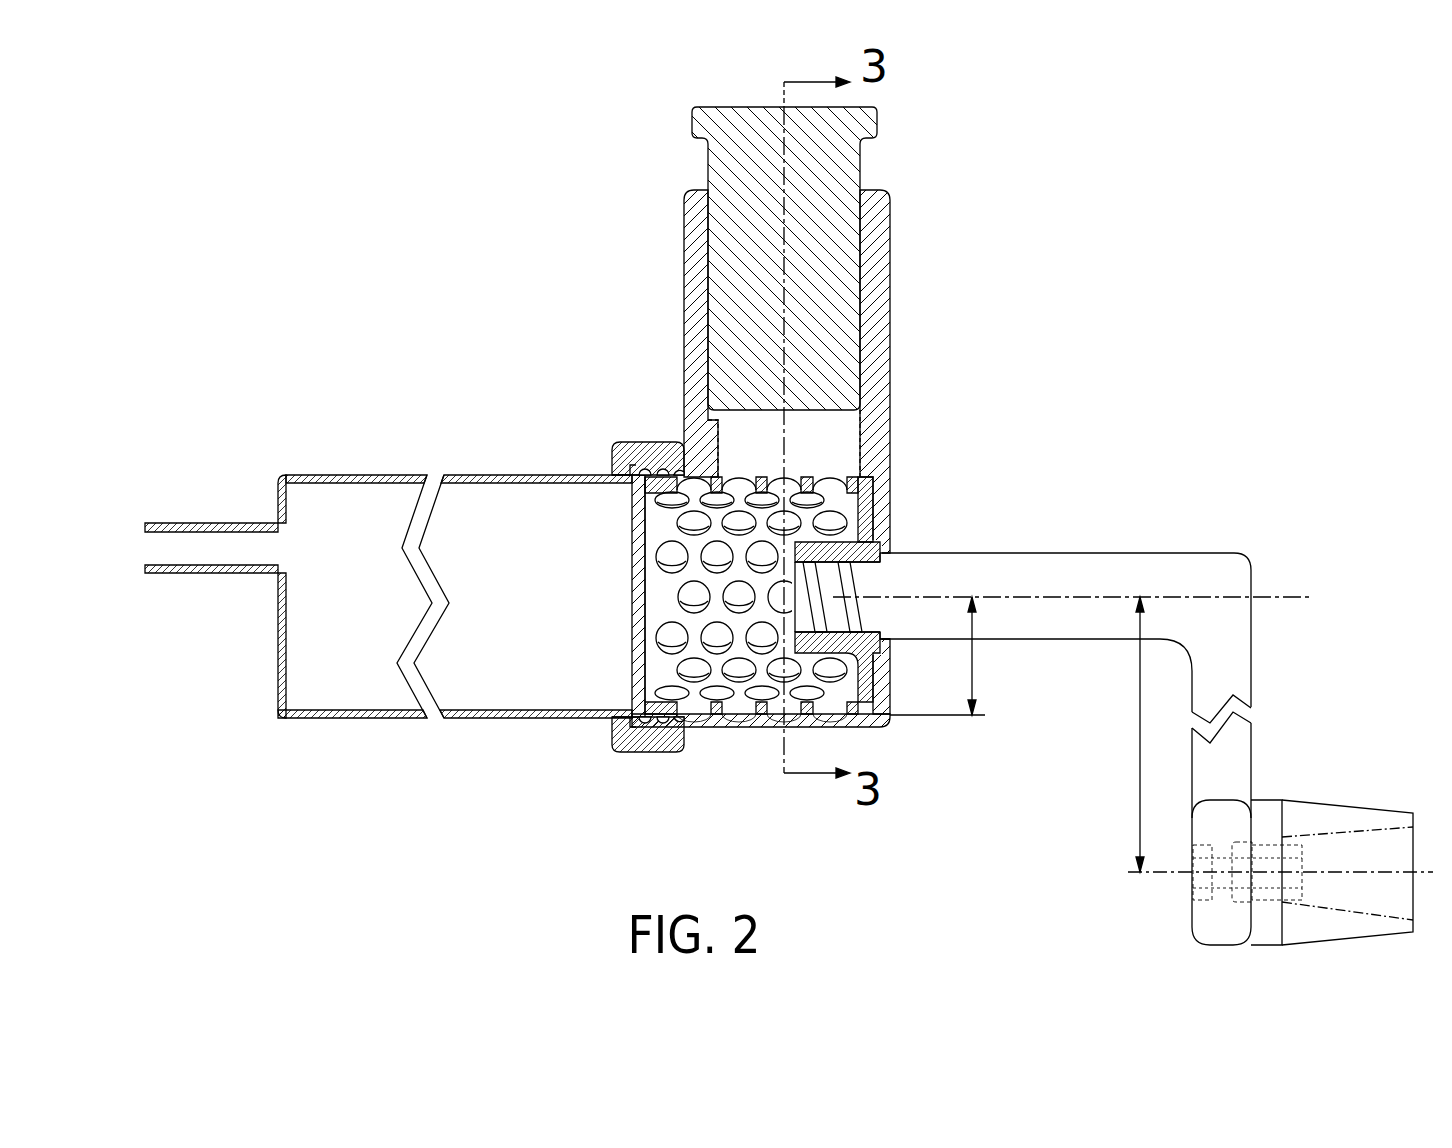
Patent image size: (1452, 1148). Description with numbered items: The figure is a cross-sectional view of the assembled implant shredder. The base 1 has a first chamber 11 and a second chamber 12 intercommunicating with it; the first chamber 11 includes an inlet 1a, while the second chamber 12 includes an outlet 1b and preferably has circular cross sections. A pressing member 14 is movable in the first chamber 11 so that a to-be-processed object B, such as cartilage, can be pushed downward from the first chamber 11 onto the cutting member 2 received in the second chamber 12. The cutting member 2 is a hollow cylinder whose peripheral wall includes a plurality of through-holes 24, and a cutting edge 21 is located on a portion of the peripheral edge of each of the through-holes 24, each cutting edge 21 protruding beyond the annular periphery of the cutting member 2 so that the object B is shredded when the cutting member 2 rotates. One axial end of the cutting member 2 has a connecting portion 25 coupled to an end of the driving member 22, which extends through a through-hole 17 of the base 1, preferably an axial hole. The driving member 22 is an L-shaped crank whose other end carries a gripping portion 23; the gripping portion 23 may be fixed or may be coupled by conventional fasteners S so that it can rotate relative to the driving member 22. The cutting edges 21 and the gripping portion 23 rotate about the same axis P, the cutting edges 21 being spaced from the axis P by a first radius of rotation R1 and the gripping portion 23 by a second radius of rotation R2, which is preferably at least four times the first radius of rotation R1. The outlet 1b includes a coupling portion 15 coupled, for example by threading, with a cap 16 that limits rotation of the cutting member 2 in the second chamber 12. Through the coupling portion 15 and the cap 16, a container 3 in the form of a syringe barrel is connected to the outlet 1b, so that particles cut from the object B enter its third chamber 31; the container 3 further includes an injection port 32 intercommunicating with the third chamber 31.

The base 1 is at (905, 266).
The inlet 1a is at (706, 190).
The outlet 1b is at (640, 716).
The cutting member 2 is at (818, 458).
The container 3 is at (388, 473).
The first chamber 11 is at (862, 318).
The second chamber 12 is at (632, 512).
The pressing member 14 is at (848, 155).
The coupling portion 15 is at (664, 462).
The cap 16 is at (642, 448).
The through-hole 17 is at (888, 643).
The cutting edges 21 is at (862, 478).
The driving member 22 is at (1055, 553).
The gripping portion 23 is at (1372, 818).
The through-holes 24 is at (862, 506).
The connecting portion 25 is at (818, 550).
The third chamber 31 is at (503, 510).
The injection port 32 is at (146, 538).
The to-be-processed object B is at (716, 438).
The axis P is at (1083, 597).
The first radius of rotation R1 is at (954, 656).
The second radius of rotation R2 is at (1120, 734).
The fasteners S is at (1300, 852).